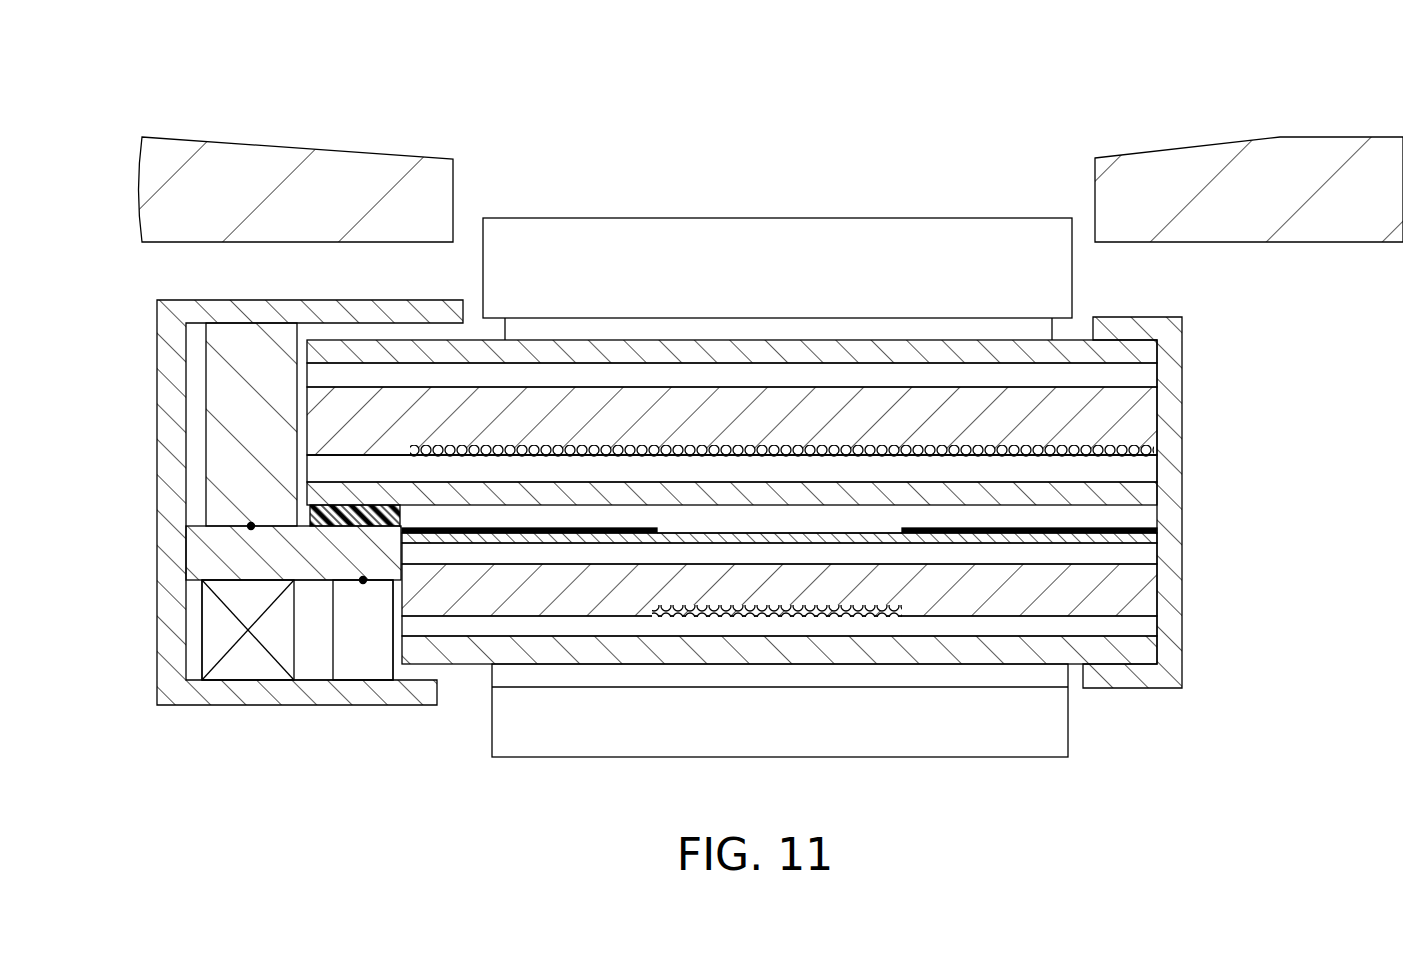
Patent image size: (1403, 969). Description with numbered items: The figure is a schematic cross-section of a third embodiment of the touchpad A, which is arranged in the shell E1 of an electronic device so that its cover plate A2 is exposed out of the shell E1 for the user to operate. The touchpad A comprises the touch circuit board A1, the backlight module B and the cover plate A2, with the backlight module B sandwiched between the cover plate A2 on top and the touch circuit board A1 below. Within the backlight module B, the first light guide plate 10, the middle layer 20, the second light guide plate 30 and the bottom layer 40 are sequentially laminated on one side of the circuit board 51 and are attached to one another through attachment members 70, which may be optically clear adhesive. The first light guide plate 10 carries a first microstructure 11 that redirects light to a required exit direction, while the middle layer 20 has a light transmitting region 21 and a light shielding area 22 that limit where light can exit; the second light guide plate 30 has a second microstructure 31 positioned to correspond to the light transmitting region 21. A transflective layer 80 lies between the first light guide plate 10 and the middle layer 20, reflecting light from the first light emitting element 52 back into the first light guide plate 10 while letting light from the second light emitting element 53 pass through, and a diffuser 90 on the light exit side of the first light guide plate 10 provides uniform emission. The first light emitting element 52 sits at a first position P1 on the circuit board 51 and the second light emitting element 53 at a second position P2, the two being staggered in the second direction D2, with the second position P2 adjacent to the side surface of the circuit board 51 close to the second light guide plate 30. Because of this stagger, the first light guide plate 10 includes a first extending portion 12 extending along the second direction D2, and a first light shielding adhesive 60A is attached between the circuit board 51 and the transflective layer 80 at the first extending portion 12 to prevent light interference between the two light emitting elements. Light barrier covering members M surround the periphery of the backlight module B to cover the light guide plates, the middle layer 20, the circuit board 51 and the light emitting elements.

The shell E1 is at (260, 155).
The touchpad A is at (625, 27).
The touch circuit board A1 is at (1032, 715).
The cover plate A2 is at (940, 245).
The backlight module B is at (477, 683).
The light barrier covering member M is at (165, 670).
The first light emitting element 52 is at (213, 495).
The circuit board 51 is at (213, 540).
The second light emitting element 53 is at (345, 630).
The first position P1 is at (251, 524).
The second position P2 is at (363, 582).
The first light shielding adhesive 60A is at (358, 503).
The diffuser 90 is at (1137, 353).
The first light guide plate 10 is at (1155, 427).
The first microstructure 11 is at (577, 455).
The first extending portion 12 is at (395, 455).
The transflective layer 80 is at (1142, 492).
The attachment member 70 is at (1043, 323).
The middle layer 20 is at (872, 530).
The light transmitting region 21 is at (885, 526).
The light shielding area 22 is at (1045, 543).
The second light guide plate 30 is at (1118, 605).
The second microstructure 31 is at (658, 615).
The bottom layer 40 is at (1072, 653).
The second direction D2 is at (1270, 826).